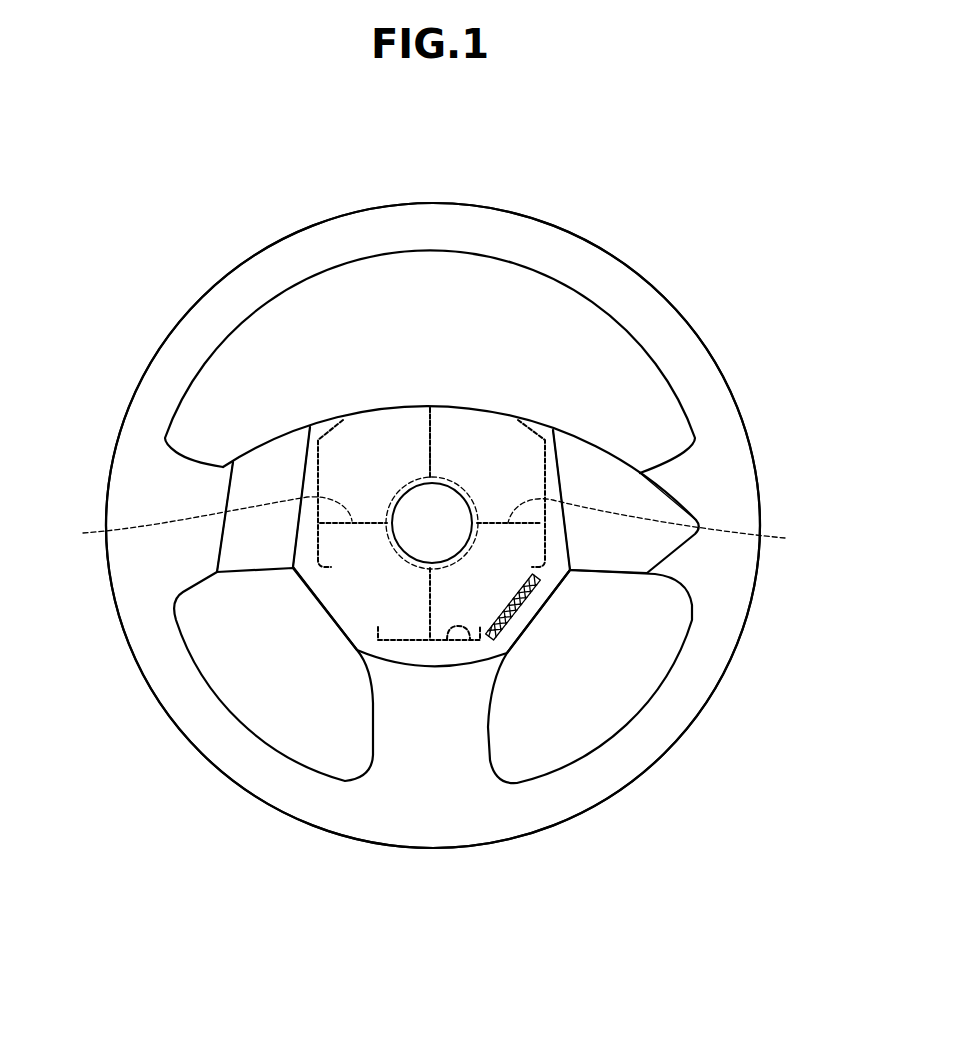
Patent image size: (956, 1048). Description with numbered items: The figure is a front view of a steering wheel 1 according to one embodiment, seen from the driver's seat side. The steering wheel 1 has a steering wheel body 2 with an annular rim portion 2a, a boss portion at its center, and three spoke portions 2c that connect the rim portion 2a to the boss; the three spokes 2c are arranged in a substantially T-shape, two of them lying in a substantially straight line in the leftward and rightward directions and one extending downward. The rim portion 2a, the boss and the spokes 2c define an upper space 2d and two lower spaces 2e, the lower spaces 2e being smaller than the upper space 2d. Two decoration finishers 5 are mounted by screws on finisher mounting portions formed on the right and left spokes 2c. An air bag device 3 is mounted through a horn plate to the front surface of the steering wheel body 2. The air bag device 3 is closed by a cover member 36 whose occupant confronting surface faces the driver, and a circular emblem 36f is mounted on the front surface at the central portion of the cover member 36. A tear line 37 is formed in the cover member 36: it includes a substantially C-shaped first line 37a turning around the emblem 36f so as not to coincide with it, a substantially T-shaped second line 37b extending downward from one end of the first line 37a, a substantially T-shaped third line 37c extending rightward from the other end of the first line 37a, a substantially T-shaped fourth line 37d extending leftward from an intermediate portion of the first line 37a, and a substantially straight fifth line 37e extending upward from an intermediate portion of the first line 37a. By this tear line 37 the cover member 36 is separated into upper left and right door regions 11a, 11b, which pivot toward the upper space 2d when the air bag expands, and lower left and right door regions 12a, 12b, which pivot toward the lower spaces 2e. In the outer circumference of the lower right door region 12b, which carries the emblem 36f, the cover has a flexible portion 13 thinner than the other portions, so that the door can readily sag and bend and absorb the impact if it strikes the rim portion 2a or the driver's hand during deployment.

The steering wheel 1 is at (437, 201).
The steering wheel body 2 is at (603, 248).
The rim portion 2a is at (685, 361).
The spoke portions 2c is at (208, 528).
The upper space 2d is at (325, 312).
The lower spaces 2e is at (280, 727).
The air bag device 3 is at (538, 421).
The decoration finishers 5 is at (245, 488).
The upper left door region 11a is at (367, 448).
The upper right door region 11b is at (495, 437).
The lower left door region 12a is at (360, 582).
The lower right door region 12b is at (493, 582).
The flexible portion 13 is at (520, 605).
The cover member 36 is at (299, 463).
The emblem 36f is at (420, 508).
The tear line 37 is at (428, 606).
The first line 37a is at (460, 478).
The second line 37b is at (455, 638).
The third line 37c is at (669, 526).
The fourth line 37d is at (194, 522).
The fifth line 37e is at (430, 440).